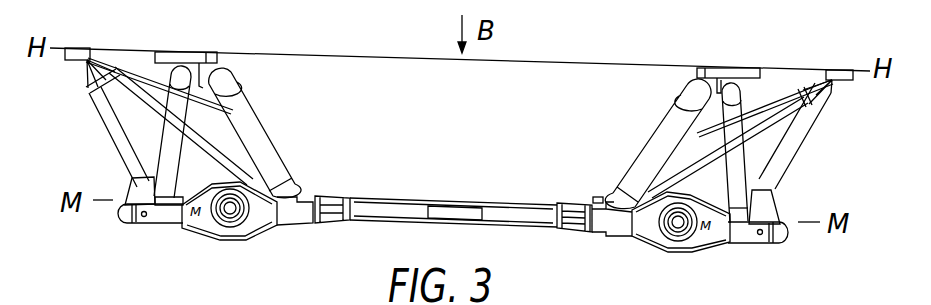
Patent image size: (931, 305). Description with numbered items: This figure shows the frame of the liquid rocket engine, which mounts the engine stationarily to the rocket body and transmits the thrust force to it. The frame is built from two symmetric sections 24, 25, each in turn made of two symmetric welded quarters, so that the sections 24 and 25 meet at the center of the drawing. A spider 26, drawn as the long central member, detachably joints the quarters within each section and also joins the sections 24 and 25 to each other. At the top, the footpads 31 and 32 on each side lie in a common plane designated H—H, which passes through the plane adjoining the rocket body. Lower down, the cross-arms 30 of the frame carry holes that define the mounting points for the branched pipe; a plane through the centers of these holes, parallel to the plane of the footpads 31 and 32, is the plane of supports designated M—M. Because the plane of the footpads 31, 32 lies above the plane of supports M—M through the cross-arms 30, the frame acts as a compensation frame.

The frame section 24 is at (270, 152).
The frame section 25 is at (740, 113).
The spider 26 is at (515, 208).
The cross-arm 30 is at (265, 222).
The footpad 31 is at (182, 51).
The footpad 32 is at (82, 46).